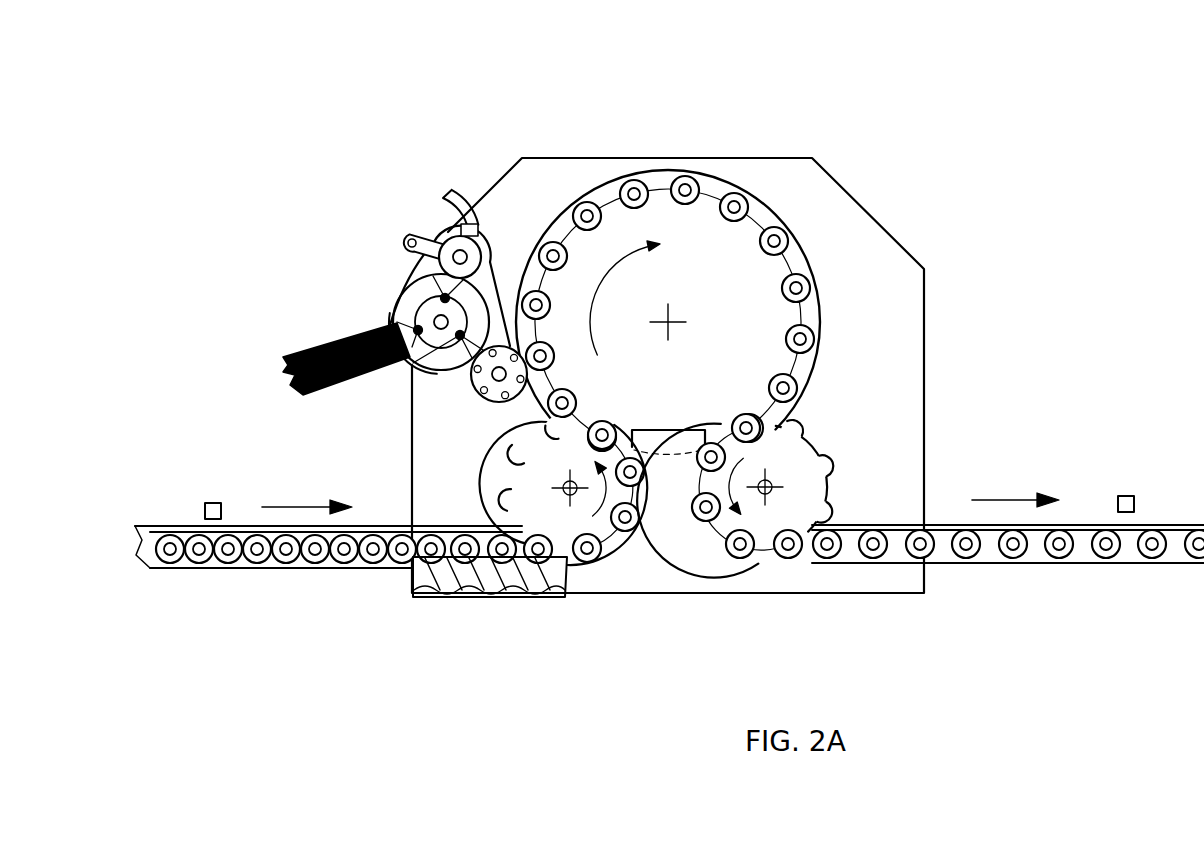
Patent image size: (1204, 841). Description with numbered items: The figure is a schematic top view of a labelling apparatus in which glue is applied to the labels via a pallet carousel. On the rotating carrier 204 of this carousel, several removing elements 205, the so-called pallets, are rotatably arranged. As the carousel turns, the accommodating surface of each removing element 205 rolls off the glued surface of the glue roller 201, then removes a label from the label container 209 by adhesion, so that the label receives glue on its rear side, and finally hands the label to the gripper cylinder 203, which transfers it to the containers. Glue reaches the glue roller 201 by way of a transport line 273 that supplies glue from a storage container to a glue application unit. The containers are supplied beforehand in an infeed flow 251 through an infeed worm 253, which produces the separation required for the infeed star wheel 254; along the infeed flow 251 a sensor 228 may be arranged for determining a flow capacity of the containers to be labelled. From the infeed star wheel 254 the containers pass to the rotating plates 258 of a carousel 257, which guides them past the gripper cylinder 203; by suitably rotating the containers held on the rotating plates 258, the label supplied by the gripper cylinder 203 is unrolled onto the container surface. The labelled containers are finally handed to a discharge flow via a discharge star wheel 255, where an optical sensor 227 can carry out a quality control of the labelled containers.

The glue roller 201 is at (443, 236).
The gripper cylinder 203 is at (488, 398).
The rotating carrier 204 is at (403, 298).
The removing elements 205 is at (414, 365).
The label container 209 is at (330, 350).
The optical sensor 227 is at (1126, 496).
The sensor 228 is at (208, 503).
The infeed flow 251 is at (264, 562).
The infeed worm 253 is at (541, 598).
The infeed star wheel 254 is at (615, 552).
The discharge star wheel 255 is at (760, 538).
The carousel 257 is at (592, 193).
The rotating plates 258 is at (543, 240).
The transport line 273 is at (458, 187).